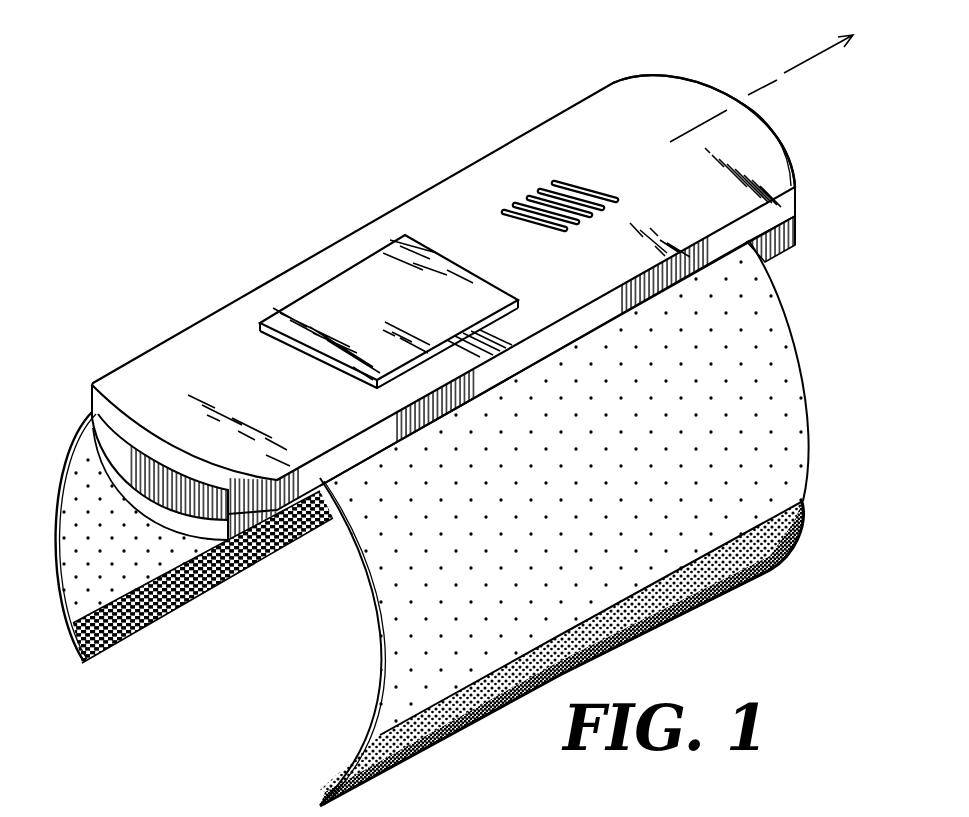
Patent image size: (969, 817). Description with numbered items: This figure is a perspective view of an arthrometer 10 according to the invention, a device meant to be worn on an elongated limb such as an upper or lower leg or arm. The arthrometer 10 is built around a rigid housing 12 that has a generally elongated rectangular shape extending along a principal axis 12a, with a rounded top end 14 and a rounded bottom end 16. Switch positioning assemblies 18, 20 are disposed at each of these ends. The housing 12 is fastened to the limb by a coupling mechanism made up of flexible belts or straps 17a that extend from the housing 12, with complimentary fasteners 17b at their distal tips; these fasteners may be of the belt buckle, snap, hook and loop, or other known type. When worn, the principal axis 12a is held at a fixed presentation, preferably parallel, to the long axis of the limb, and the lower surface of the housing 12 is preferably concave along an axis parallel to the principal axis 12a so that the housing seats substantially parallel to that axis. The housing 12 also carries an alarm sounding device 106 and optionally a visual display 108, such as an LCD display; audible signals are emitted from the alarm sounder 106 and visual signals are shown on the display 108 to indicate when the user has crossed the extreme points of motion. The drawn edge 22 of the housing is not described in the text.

The arthrometer 10 is at (808, 343).
The rigid housing 12 is at (660, 102).
The principal axis 12a is at (815, 57).
The rounded top end 14 is at (785, 175).
The rounded bottom end 16 is at (232, 577).
The flexible belts or straps 17a is at (560, 551).
The complimentary fasteners 17b is at (157, 623).
The switch positioning assembly 18 is at (836, 129).
The switch positioning assembly 20 is at (157, 498).
The rounded end edge of lid 22 is at (777, 123).
The alarm sounding device 106 is at (580, 183).
The visual display 108 is at (408, 276).